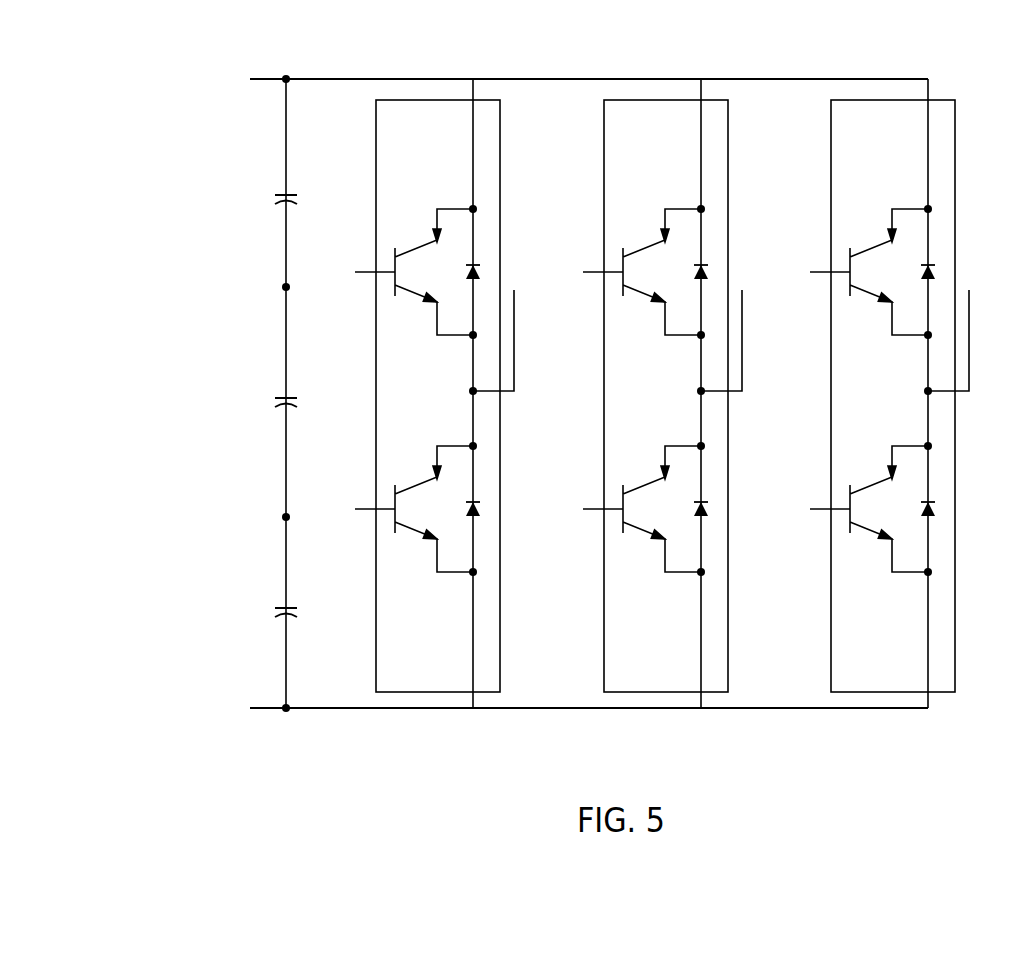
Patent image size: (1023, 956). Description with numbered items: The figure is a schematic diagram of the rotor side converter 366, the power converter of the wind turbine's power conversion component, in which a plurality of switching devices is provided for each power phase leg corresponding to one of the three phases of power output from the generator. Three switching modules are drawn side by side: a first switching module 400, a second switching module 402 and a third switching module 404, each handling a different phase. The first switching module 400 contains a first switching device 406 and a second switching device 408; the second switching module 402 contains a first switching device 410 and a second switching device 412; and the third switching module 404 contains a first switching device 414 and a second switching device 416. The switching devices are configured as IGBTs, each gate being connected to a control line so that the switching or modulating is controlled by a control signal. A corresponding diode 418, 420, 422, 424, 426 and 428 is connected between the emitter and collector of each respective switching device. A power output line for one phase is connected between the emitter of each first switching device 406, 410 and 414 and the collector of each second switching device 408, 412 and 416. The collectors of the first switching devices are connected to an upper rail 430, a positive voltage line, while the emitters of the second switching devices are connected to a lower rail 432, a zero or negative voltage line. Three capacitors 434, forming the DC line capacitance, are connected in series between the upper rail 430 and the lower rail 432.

The rotor side converter 366 is at (68, 701).
The first switching module 400 is at (437, 693).
The second switching module 402 is at (665, 693).
The third switching module 404 is at (942, 693).
The first switching device 406 is at (413, 247).
The second switching device 408 is at (412, 533).
The first switching device 410 is at (641, 247).
The second switching device 412 is at (640, 533).
The first switching device 414 is at (868, 247).
The second switching device 416 is at (867, 533).
The diode 418 is at (475, 240).
The diode 420 is at (473, 547).
The diode 422 is at (703, 240).
The diode 424 is at (701, 547).
The diode 426 is at (930, 240).
The diode 428 is at (930, 543).
The upper rail 430 is at (321, 78).
The lower rail 432 is at (337, 709).
The capacitors 434 is at (283, 207).